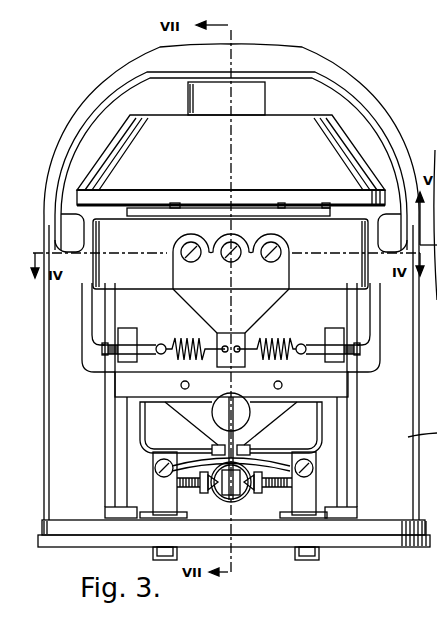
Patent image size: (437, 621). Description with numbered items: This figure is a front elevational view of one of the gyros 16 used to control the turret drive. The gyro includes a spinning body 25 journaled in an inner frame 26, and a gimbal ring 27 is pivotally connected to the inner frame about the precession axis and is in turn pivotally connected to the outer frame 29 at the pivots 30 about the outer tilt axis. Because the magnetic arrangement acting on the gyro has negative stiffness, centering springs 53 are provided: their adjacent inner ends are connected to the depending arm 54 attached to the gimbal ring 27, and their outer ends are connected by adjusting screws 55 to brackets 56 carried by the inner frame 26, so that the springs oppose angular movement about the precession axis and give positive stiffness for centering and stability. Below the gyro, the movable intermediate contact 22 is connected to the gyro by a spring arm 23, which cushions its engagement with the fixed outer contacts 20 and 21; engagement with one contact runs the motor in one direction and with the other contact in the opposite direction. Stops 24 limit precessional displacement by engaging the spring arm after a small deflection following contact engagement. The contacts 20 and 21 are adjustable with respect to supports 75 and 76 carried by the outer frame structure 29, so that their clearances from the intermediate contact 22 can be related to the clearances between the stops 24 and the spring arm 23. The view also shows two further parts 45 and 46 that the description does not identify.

The gyro 16 is at (263, 158).
The outer contact 20 is at (212, 491).
The outer contact 21 is at (252, 492).
The intermediate contact 22 is at (236, 497).
The spring arm 23 is at (195, 431).
The stops 24 is at (214, 448).
The spinning body 25 is at (289, 124).
The inner frame 26 is at (326, 420).
The gimbal ring 27 is at (152, 233).
The outer frame 29 is at (103, 82).
The pivotal connection 30 is at (90, 248).
The upright support 45 is at (118, 452).
The upright support 46 is at (345, 473).
The centering springs 53 is at (184, 342).
The depending arm 54 is at (262, 297).
The adjusting screws 55 is at (132, 358).
The brackets 56 is at (333, 354).
The support 75 is at (160, 505).
The support 76 is at (312, 502).